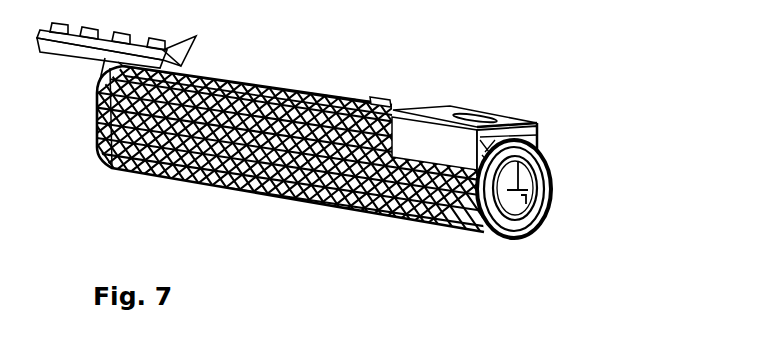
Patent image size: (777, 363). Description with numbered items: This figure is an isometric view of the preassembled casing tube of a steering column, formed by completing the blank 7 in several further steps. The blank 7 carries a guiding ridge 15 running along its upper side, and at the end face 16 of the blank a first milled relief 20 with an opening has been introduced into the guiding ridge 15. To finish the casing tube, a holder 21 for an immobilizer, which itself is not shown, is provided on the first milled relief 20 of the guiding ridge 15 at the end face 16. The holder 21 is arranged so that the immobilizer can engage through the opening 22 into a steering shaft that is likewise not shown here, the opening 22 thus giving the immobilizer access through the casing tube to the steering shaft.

The blank 7 is at (302, 203).
The guiding ridge 15 is at (382, 107).
The end face 16 is at (538, 223).
The first milled relief 20 is at (538, 137).
The holder 21 is at (507, 120).
The opening 22 is at (535, 125).